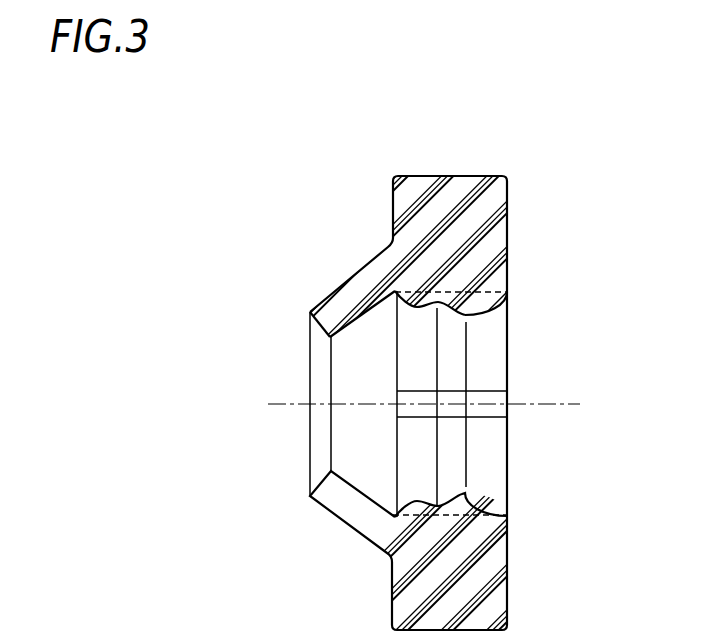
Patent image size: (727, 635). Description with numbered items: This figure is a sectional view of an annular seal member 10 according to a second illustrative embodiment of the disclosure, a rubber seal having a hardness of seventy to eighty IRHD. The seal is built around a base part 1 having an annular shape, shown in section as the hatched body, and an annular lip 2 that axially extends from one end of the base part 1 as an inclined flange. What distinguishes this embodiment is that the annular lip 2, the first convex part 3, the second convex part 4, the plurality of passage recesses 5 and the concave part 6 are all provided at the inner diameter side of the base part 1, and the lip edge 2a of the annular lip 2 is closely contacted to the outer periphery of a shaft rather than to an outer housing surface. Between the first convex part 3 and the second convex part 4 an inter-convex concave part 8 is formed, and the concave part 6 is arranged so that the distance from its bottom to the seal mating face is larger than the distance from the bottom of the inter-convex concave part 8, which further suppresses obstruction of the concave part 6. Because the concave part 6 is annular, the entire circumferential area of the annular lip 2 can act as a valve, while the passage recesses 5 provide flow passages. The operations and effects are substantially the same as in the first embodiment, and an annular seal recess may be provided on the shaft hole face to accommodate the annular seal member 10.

The base part 1 is at (458, 190).
The annular lip 2 is at (352, 283).
The lip edge 2a is at (332, 338).
The first convex part 3 is at (466, 316).
The second convex part 4 is at (422, 313).
The passage recesses 5 is at (492, 396).
The concave part 6 is at (378, 503).
The inter-convex concave part 8 is at (437, 500).
The annular seal member 10 is at (363, 368).